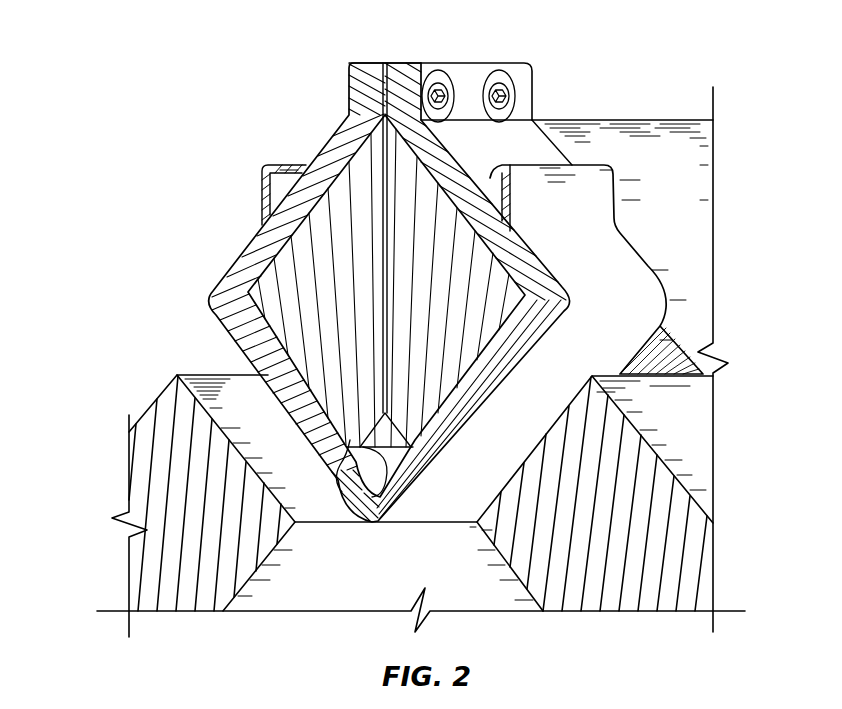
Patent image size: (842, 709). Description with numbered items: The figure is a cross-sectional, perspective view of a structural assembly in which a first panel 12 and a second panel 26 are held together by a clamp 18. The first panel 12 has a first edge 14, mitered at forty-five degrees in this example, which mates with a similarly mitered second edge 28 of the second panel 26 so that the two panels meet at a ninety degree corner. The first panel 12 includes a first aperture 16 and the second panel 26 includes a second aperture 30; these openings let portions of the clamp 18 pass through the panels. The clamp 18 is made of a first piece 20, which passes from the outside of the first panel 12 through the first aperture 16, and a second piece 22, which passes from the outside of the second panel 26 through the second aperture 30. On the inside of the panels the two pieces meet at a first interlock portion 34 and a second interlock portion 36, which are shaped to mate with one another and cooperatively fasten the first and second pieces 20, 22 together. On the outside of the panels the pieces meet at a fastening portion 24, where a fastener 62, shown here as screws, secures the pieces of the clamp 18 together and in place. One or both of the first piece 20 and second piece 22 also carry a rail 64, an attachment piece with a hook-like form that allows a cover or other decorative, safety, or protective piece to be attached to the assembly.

The first panel 12 is at (210, 531).
The first edge 14 is at (383, 267).
The first aperture 16 is at (222, 354).
The clamp 18 is at (255, 80).
The first piece 20 is at (245, 263).
The second piece 22 is at (600, 270).
The fastening portion 24 is at (420, 57).
The second panel 26 is at (604, 531).
The second edge 28 is at (385, 338).
The second aperture 30 is at (661, 367).
The first interlock portion 34 is at (395, 440).
The second interlock portion 36 is at (350, 440).
The fastener 62 is at (497, 72).
The rail 64 is at (262, 168).